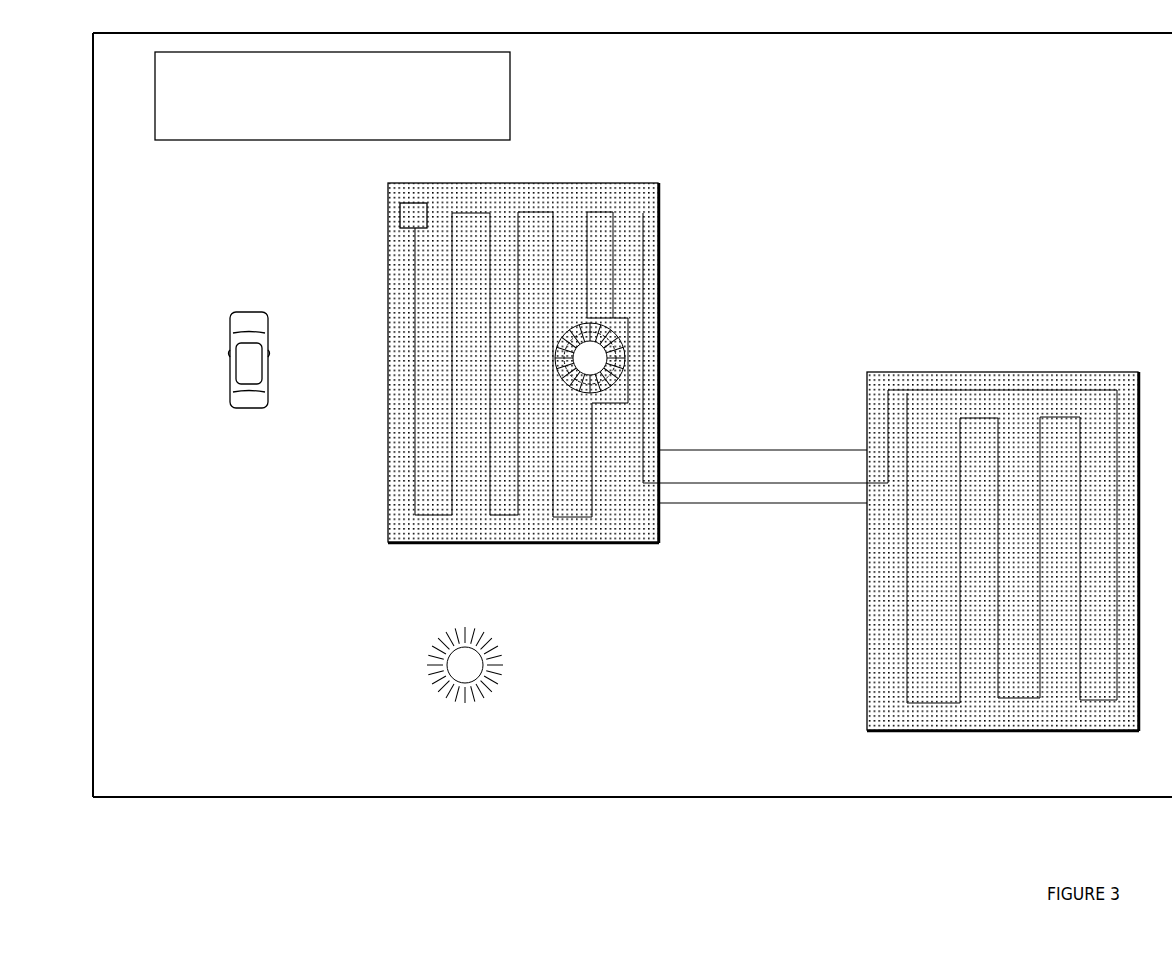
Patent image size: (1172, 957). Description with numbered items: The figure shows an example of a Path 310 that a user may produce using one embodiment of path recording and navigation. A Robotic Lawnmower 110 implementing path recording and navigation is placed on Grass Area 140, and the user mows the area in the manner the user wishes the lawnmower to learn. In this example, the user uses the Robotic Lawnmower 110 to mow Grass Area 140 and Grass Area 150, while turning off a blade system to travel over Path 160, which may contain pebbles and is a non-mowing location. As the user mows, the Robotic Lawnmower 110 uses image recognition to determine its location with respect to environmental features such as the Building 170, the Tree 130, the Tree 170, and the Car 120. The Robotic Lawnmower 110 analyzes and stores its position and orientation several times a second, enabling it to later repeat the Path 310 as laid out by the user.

The robotic lawnmower 110 is at (478, 207).
The car 120 is at (222, 352).
The tree 130 is at (615, 350).
The grass area 140 is at (668, 413).
The grass area 150 is at (982, 362).
The path 160 is at (773, 516).
The building / tree 170 is at (580, 688).
The path 310 is at (401, 433).